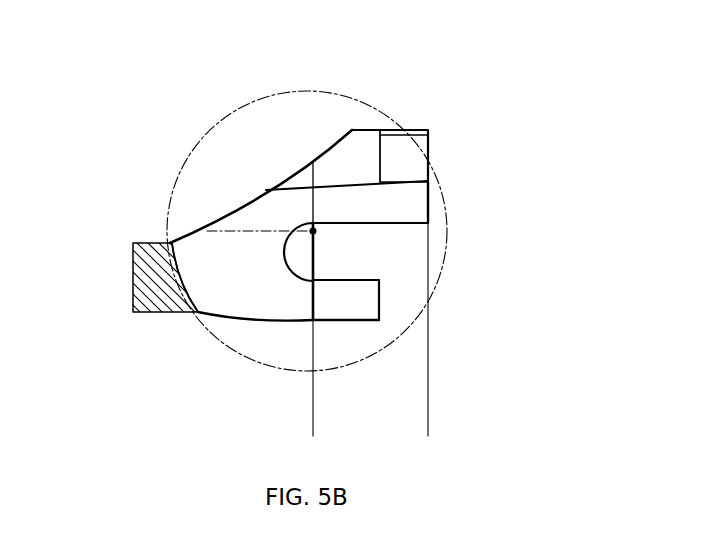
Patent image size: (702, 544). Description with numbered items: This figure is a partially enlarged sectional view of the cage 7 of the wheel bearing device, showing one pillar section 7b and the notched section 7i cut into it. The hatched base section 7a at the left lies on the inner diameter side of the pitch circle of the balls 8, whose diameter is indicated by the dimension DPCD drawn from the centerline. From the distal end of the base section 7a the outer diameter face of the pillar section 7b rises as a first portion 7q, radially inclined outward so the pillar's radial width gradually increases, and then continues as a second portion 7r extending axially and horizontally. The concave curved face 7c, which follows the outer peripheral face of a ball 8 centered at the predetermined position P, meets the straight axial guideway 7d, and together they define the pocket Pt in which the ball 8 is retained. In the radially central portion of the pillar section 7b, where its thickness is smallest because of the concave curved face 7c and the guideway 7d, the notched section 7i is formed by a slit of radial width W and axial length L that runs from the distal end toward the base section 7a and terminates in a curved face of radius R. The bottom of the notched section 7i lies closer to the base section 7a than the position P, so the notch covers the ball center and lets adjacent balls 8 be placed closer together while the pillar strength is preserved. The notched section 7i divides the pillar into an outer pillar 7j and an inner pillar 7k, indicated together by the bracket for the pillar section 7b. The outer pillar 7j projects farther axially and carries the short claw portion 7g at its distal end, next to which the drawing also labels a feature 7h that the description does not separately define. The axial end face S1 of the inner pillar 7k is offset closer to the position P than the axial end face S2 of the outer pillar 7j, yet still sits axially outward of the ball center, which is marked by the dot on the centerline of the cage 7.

The cage 7 is at (99, 54).
The ball 8 is at (273, 96).
The base section 7a is at (134, 278).
The concave curved face 7c is at (176, 248).
The first portion 7q is at (213, 223).
The guideway 7d is at (349, 141).
The second portion 7r is at (381, 130).
The short claw portion 7g is at (450, 77).
The top land 7h is at (418, 133).
The outer pillar 7j is at (430, 208).
The inner pillar 7k is at (372, 292).
The pillar section 7b is at (537, 207).
The notched section 7i is at (368, 251).
The axial end face of the inner pillar S1 is at (383, 306).
The axial end face of the outer pillar S2 is at (433, 191).
The predetermined position P is at (312, 228).
The pocket Pt is at (256, 207).
The radius R is at (283, 274).
The radial width W is at (428, 223).
The axial length L is at (416, 432).
The pitch circle diameter DPCD is at (207, 231).